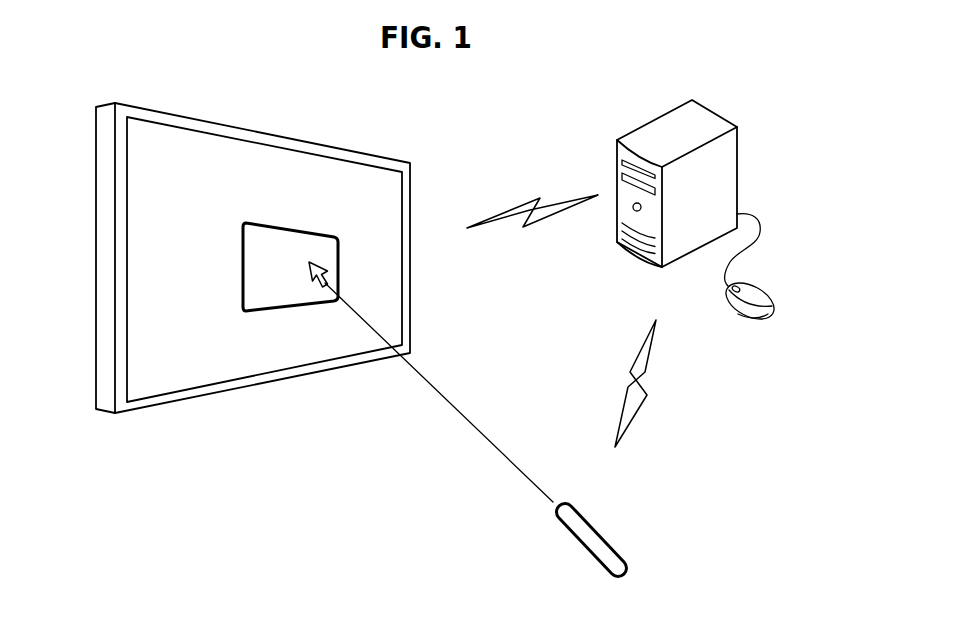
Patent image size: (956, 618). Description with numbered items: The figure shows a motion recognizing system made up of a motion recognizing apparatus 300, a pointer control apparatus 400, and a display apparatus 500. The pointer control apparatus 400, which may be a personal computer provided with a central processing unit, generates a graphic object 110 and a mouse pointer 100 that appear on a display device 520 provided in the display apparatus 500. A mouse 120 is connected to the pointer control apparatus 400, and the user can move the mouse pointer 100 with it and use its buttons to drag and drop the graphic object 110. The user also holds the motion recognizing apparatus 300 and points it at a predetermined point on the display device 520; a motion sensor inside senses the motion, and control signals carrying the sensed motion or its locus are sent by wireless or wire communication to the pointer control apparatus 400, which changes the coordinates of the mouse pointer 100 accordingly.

The mouse pointer 100 is at (324, 266).
The graphic object 110 is at (245, 245).
The mouse 120 is at (772, 288).
The motion recognizing apparatus 300 is at (613, 544).
The pointer control apparatus 400 is at (714, 110).
The display apparatus 500 is at (105, 260).
The display device 520 is at (227, 148).